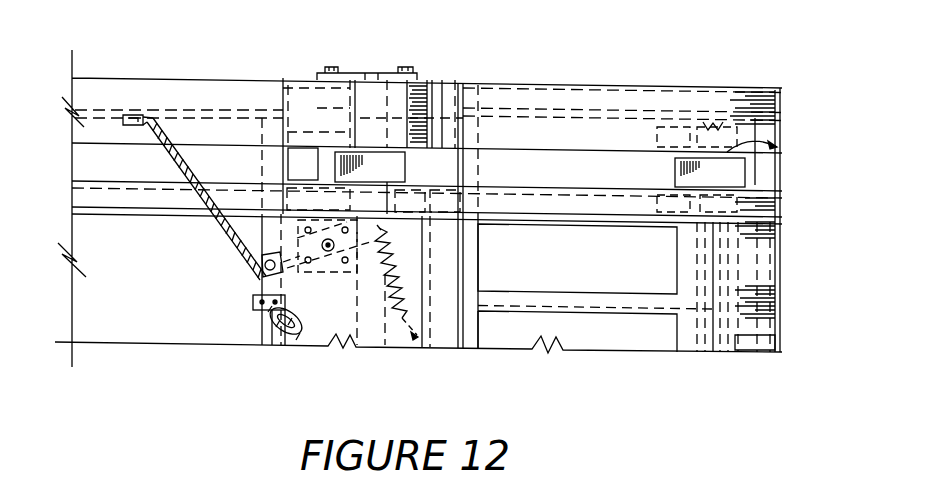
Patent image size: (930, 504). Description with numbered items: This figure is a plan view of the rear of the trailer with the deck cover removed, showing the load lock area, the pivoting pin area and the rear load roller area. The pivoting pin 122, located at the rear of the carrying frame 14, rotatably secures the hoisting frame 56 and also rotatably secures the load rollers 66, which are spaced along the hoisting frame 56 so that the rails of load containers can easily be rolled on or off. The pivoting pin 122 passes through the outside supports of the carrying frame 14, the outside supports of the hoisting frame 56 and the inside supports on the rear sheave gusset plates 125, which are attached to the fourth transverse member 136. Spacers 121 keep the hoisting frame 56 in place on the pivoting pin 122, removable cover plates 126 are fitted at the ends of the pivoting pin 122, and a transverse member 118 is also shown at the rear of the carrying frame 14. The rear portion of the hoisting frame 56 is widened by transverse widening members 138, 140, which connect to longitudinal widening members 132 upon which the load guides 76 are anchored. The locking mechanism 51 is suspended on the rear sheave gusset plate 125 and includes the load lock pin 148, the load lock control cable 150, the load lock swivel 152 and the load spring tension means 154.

The carrying frame 14 is at (223, 93).
The locking mechanism 51 is at (267, 362).
The hoisting frame 56 is at (87, 200).
The load rollers 66 is at (747, 172).
The load guides 76 is at (688, 87).
The transverse member 118 is at (258, 162).
The spacers 121 is at (300, 160).
The pivoting pin 122 is at (372, 110).
The rear sheave gusset plates 125 is at (302, 347).
The removable cover plates 126 is at (387, 72).
The longitudinal widening members 132 is at (565, 100).
The fourth transverse member 136 is at (440, 328).
The transverse widening member 138 is at (782, 180).
The transverse widening member 140 is at (480, 158).
The load lock pin 148 is at (237, 250).
The load lock control cable 150 is at (230, 233).
The load lock swivel 152 is at (313, 250).
The load spring tension means 154 is at (403, 330).